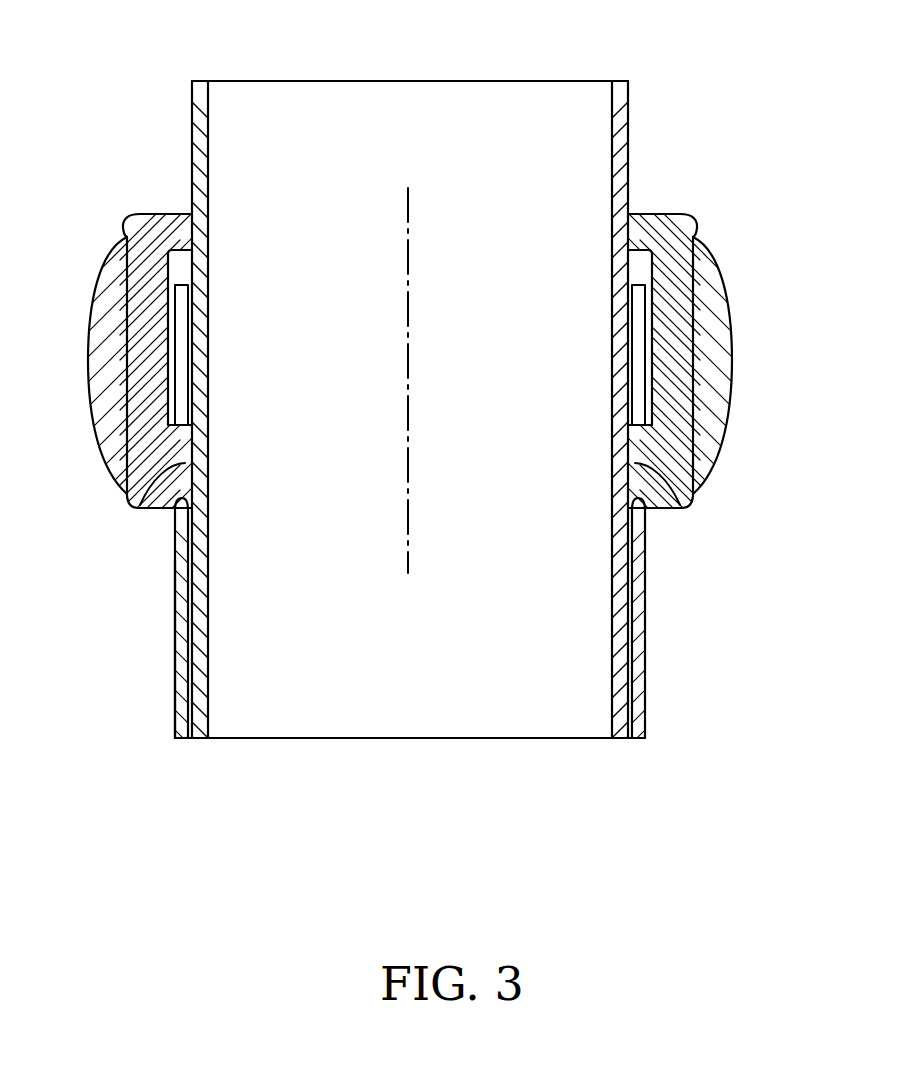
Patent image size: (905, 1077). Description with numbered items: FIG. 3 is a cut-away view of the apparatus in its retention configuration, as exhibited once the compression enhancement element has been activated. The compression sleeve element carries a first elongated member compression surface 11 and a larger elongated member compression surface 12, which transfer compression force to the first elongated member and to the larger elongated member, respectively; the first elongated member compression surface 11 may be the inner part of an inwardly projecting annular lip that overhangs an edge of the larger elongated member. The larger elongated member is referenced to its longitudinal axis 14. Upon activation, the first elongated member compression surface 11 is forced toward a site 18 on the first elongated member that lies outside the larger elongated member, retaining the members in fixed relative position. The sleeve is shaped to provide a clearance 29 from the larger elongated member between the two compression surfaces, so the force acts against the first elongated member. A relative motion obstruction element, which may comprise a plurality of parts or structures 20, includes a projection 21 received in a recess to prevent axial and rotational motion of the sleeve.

The first elongated member compression surface 11 is at (638, 215).
The larger elongated member compression surface 12 is at (183, 530).
The larger elongated member longitudinal axis 14 is at (408, 453).
The site on the first elongated member 18 is at (626, 235).
The plurality of parts or structures 20 is at (140, 505).
The projection 21 is at (177, 586).
The clearance 29 is at (172, 378).